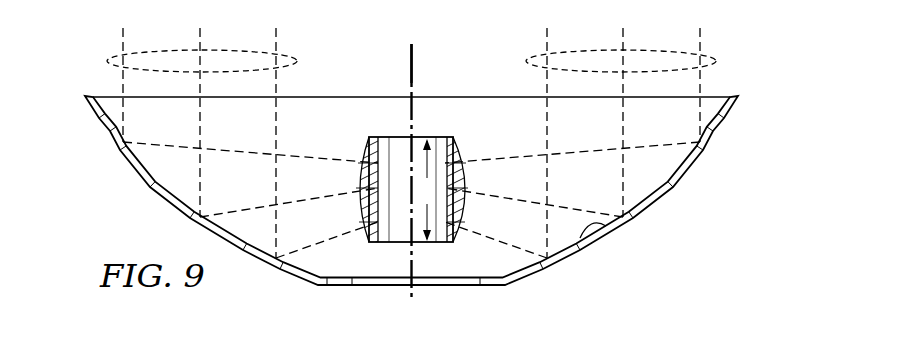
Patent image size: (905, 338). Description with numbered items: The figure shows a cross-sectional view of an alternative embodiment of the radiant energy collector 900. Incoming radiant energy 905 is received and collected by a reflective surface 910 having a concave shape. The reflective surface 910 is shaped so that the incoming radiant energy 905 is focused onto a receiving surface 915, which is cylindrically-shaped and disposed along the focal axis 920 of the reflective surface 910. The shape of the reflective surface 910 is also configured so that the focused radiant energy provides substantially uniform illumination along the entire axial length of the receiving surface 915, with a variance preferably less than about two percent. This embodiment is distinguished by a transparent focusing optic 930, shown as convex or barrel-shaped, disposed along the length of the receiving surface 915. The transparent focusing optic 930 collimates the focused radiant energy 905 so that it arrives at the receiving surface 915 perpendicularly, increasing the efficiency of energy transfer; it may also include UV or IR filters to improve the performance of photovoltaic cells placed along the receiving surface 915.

The parabolic antenna / bowl assembly 900 is at (733, 170).
The radiant energy 905 is at (107, 58).
The reflective surface 910 is at (610, 233).
The receiving surface 915 is at (400, 137).
The focal axis 920 is at (413, 65).
The transparent focusing optic 930 is at (362, 153).